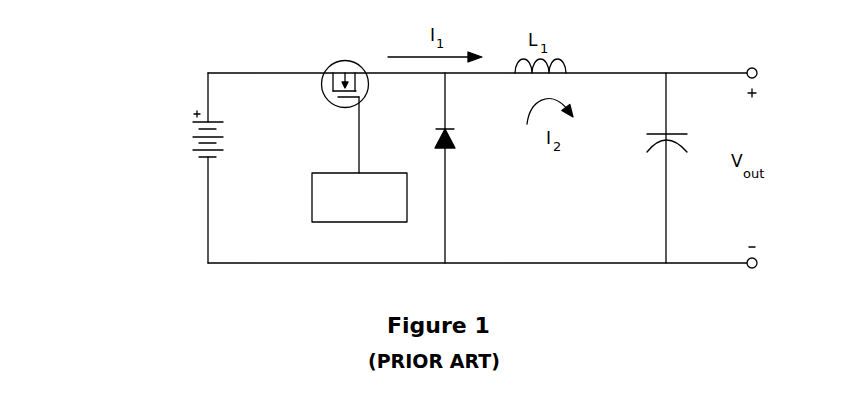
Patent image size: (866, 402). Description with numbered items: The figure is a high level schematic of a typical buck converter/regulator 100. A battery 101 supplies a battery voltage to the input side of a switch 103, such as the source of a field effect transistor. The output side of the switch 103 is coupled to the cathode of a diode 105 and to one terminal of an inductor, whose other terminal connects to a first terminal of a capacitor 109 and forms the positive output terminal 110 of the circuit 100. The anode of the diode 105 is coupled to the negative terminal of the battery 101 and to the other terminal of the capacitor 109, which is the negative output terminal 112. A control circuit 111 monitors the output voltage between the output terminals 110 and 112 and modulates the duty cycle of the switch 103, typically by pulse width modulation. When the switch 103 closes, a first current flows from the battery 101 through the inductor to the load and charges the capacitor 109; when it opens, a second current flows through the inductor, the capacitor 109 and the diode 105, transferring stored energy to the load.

The buck converter/regulator 100 is at (319, 290).
The battery 101 is at (205, 160).
The switch Q1 103 is at (325, 63).
The diode D1 105 is at (450, 153).
The capacitor C1 109 is at (650, 163).
The positive output terminal 110 is at (757, 67).
The control circuit 111 is at (342, 222).
The negative output terminal 112 is at (757, 269).